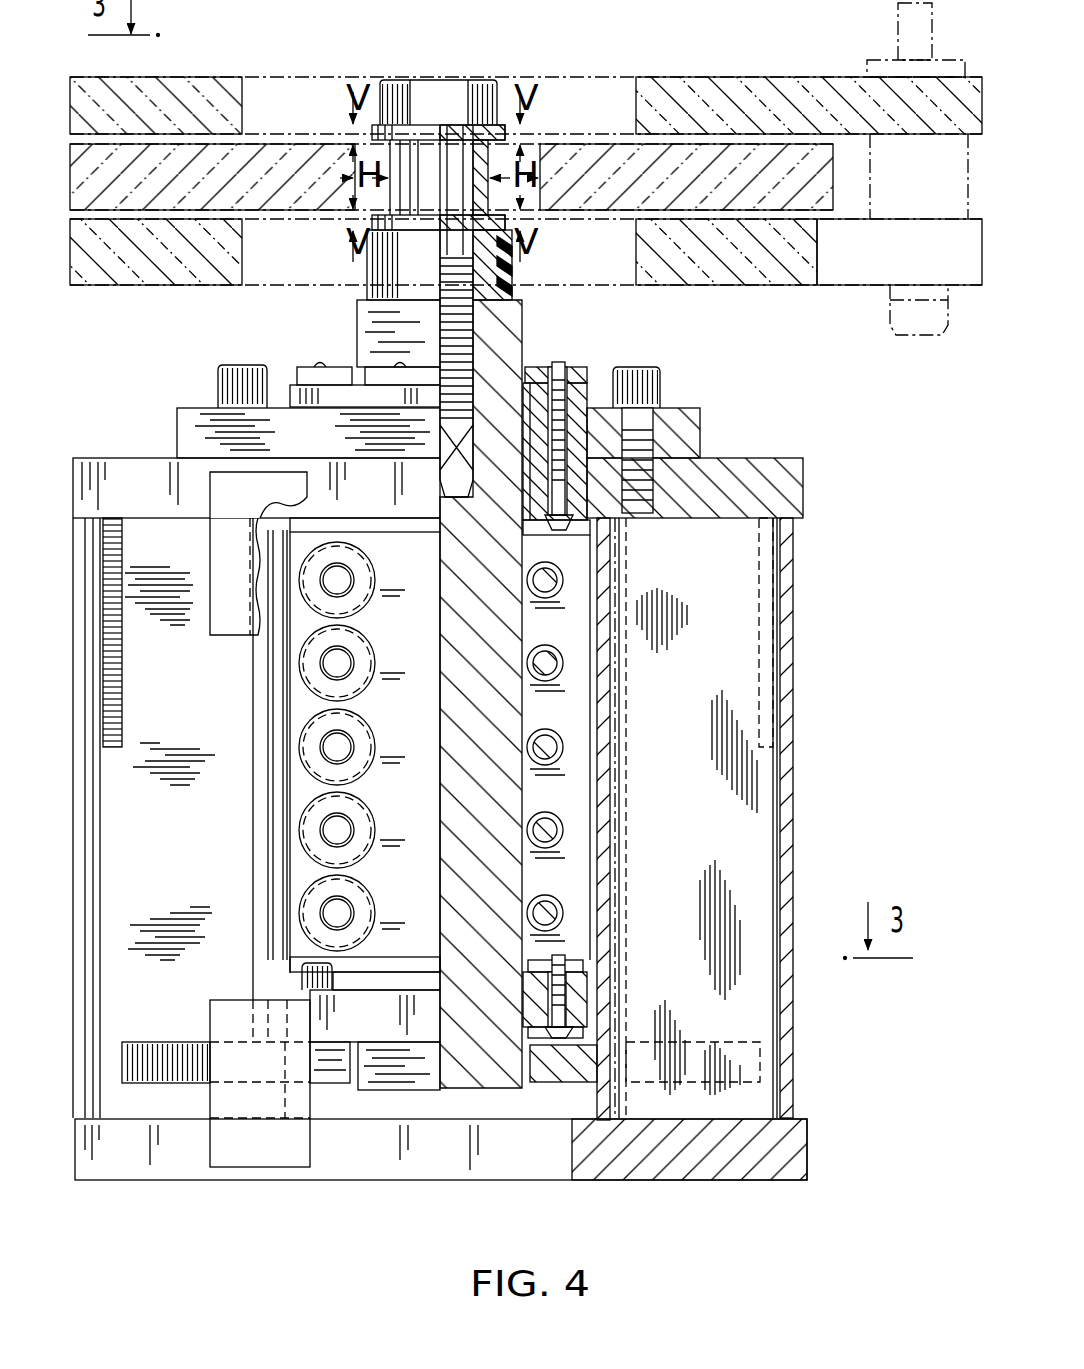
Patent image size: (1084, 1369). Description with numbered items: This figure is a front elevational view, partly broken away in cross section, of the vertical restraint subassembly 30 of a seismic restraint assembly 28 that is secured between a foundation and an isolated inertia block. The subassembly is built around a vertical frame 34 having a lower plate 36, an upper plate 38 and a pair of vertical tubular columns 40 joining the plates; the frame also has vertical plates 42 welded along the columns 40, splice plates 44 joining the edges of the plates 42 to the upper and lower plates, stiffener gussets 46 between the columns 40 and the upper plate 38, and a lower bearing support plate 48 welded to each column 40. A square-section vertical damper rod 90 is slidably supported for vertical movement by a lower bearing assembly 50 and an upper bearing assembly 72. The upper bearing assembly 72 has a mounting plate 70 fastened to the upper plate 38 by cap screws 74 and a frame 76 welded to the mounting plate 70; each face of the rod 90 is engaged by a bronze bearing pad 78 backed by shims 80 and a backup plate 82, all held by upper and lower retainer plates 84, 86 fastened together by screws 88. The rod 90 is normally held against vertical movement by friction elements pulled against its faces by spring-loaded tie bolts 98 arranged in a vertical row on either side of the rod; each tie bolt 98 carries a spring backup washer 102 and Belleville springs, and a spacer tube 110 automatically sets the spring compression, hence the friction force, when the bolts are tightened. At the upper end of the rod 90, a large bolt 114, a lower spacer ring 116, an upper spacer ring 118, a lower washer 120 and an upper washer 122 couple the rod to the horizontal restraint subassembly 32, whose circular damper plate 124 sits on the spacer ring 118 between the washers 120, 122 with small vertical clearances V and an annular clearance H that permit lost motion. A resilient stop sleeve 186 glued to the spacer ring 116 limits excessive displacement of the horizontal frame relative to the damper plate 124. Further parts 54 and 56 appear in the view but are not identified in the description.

The seismic restraint assembly 28 is at (850, 691).
The vertical restraint subassembly 30 is at (818, 576).
The horizontal restraint subassembly 32 is at (746, 64).
The vertical frame 34 is at (797, 823).
The lower plate 36 is at (806, 1159).
The upper plate 38 is at (796, 476).
The vertical tubular columns 40 is at (190, 847).
The vertical plates 42 is at (253, 724).
The splice plates 44 is at (226, 556).
The stiffener gussets 46 is at (116, 660).
The lower bearing support plate 48 is at (160, 1070).
The lower bearing assembly 50 is at (592, 997).
The retainer plate 54 is at (302, 993).
The cap screw 56 is at (318, 964).
The mounting plate 70 is at (696, 434).
The upper bearing assembly 72 is at (700, 404).
The cap screws 74 is at (226, 380).
The frame 76 is at (582, 497).
The bronze bearing pad 78 is at (504, 412).
The shims 80 is at (540, 436).
The backup plate 82 is at (590, 402).
The upper retainer plate 84 is at (566, 400).
The lower retainer plate 86 is at (590, 531).
The screws 88 is at (562, 372).
The vertical damper rod 90 is at (356, 335).
The tie bolts 98 is at (346, 586).
The spring backup washer 102 is at (362, 750).
The spacer tube 110 is at (566, 753).
The large bolt 114 is at (452, 95).
The lower spacer ring 116 is at (500, 274).
The upper spacer ring 118 is at (482, 163).
The lower washer 120 is at (490, 216).
The upper washer 122 is at (498, 125).
The circular damper plate 124 is at (680, 165).
The resilient stop sleeve 186 is at (518, 277).